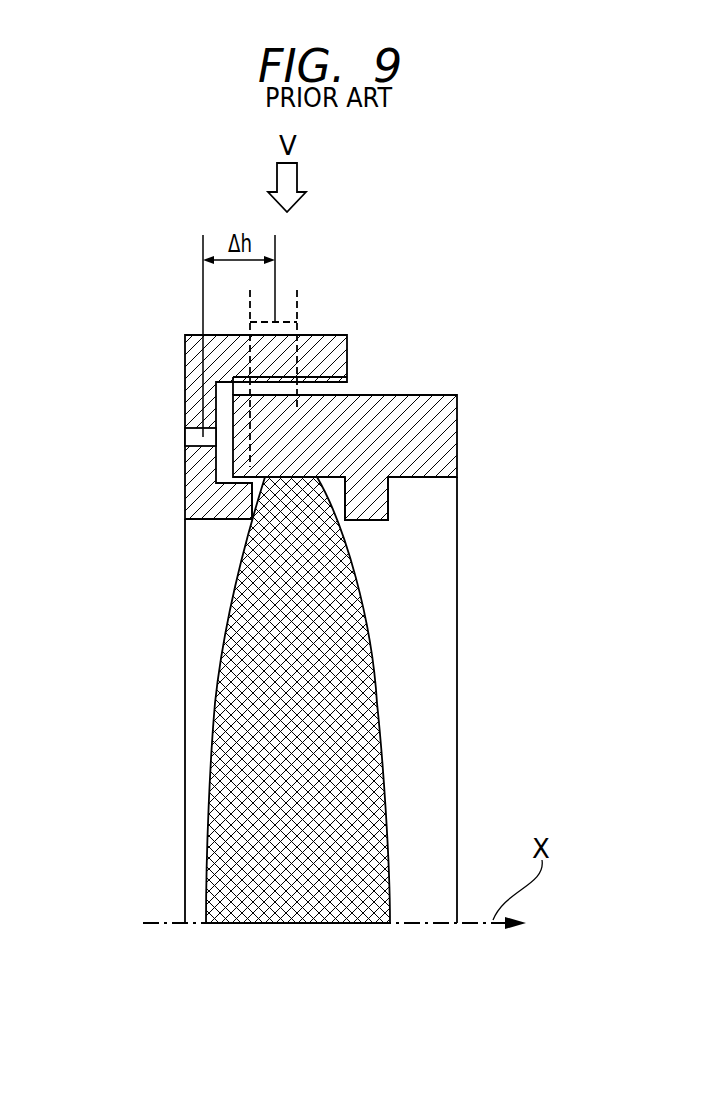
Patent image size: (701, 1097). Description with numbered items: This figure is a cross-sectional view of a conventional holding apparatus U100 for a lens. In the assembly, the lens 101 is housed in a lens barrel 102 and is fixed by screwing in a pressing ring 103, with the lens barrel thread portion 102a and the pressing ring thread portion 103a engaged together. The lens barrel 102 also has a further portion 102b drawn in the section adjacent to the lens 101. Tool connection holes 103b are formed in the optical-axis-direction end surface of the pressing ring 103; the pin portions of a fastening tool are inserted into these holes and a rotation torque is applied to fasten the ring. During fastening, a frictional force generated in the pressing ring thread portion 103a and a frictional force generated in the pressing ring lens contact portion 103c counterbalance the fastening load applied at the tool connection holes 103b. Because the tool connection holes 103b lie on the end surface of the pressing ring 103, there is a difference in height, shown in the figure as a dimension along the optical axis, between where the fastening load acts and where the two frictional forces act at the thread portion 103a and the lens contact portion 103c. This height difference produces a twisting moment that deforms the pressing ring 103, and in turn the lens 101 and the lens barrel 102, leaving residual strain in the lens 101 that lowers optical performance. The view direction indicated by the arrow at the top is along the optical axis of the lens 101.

The holding apparatus U100 is at (367, 238).
The lens 101 is at (348, 697).
The lens barrel 102 is at (459, 420).
The lens barrel thread portion 102a is at (343, 390).
The step portion of plate member 102b is at (345, 534).
The pressing ring 103 is at (197, 368).
The pressing ring thread portion 103a is at (348, 378).
The tool connection holes 103b is at (193, 443).
The pressing ring lens contact portion 103c is at (252, 519).